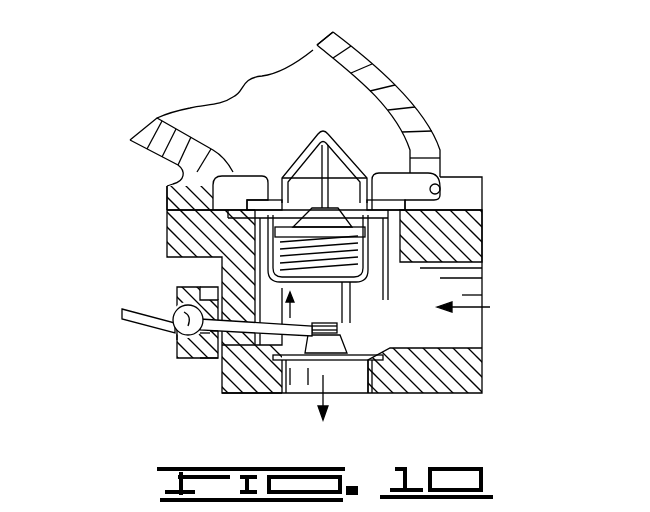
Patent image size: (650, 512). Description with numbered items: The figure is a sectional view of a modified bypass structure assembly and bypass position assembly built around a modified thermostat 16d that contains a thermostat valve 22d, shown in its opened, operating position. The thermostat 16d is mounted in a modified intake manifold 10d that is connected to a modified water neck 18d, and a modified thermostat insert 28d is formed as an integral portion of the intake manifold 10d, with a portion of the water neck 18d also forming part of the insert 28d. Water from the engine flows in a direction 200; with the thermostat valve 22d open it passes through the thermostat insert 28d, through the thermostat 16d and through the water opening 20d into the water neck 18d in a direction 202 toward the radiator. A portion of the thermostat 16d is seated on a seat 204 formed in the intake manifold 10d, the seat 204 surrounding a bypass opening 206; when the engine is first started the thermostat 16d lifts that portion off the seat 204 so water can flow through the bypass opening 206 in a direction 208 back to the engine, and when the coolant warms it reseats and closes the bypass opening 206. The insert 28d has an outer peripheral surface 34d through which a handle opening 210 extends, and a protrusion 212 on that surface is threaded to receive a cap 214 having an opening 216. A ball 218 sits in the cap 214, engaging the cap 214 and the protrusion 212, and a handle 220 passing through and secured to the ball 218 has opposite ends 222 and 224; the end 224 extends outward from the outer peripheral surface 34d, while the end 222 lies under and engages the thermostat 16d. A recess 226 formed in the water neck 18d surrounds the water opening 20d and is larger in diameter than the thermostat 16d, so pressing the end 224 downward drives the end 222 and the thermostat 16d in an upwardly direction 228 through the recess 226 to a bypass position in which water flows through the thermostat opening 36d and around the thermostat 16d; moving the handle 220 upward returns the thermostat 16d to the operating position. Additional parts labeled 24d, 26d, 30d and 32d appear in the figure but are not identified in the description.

The intake manifold 10d is at (490, 232).
The thermostat 16d is at (362, 142).
The water neck 18d is at (380, 41).
The water opening 20d is at (188, 108).
The thermostat valve 22d is at (368, 176).
The left chamber 24d is at (214, 160).
The flow direction 26d is at (138, 331).
The thermostat insert 28d is at (200, 222).
The housing flange 30d is at (167, 190).
The housing bottom 32d is at (222, 394).
The outer peripheral surface 34d is at (212, 358).
The thermostat opening 36d is at (250, 262).
The direction 200 is at (490, 307).
The direction 202 is at (288, 95).
The seat 204 is at (390, 347).
The bypass opening 206 is at (293, 396).
The direction 208 is at (335, 396).
The handle opening 210 is at (209, 352).
The protrusion 212 is at (205, 287).
The cap 214 is at (202, 333).
The opening 216 is at (184, 330).
The ball 218 is at (183, 312).
The handle 220 is at (213, 332).
The end 222 is at (340, 332).
The end 224 is at (122, 313).
The recess 226 is at (438, 176).
The upwardly direction 228 is at (294, 310).